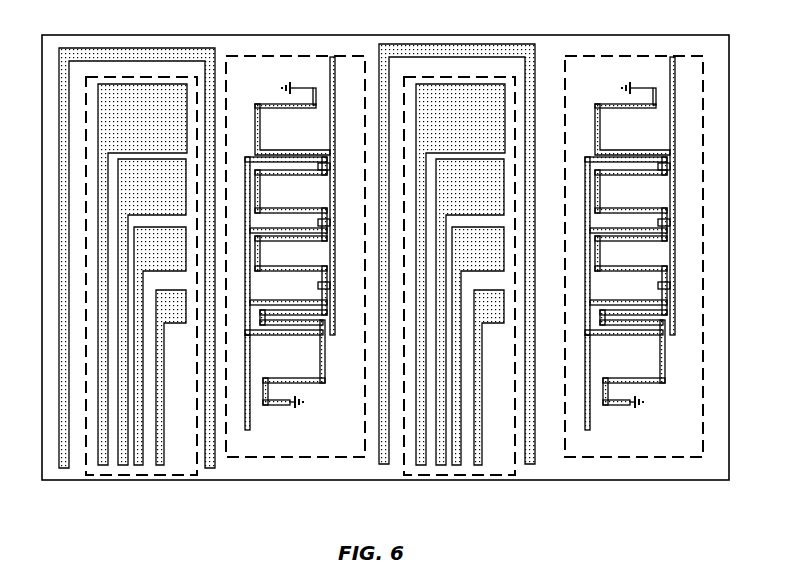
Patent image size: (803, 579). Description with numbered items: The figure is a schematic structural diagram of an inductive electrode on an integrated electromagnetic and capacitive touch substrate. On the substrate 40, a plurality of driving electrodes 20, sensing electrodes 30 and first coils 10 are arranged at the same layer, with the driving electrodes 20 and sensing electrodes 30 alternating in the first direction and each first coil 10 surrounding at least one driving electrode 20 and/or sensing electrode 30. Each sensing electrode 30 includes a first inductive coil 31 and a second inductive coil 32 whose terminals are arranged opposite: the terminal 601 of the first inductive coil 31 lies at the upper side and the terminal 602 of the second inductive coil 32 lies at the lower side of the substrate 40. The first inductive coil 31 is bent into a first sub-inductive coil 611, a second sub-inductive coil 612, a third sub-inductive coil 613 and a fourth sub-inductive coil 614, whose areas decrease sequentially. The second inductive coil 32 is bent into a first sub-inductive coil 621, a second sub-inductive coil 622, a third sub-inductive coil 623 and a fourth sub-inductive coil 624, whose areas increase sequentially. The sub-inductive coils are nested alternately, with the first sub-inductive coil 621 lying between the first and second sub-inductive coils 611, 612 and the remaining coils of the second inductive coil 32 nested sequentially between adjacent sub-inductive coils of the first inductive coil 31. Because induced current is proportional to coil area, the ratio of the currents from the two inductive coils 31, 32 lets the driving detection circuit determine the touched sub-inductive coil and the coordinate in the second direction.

The first coil 10 is at (143, 56).
The driving electrode 20 is at (127, 470).
The sensing electrode 30 is at (322, 459).
The first inductive coil 31 is at (268, 112).
The second inductive coil 32 is at (250, 160).
The substrate 40 is at (549, 60).
The terminal of the first inductive coil 601 is at (335, 96).
The terminal of the second inductive coil 602 is at (250, 430).
The first sub-inductive coil 611 is at (260, 133).
The second sub-inductive coil 612 is at (262, 200).
The third sub-inductive coil 613 is at (262, 262).
The fourth sub-inductive coil 614 is at (262, 316).
The first sub-inductive coil 621 is at (330, 167).
The second sub-inductive coil 622 is at (330, 223).
The third sub-inductive coil 623 is at (330, 286).
The fourth sub-inductive coil 624 is at (325, 363).